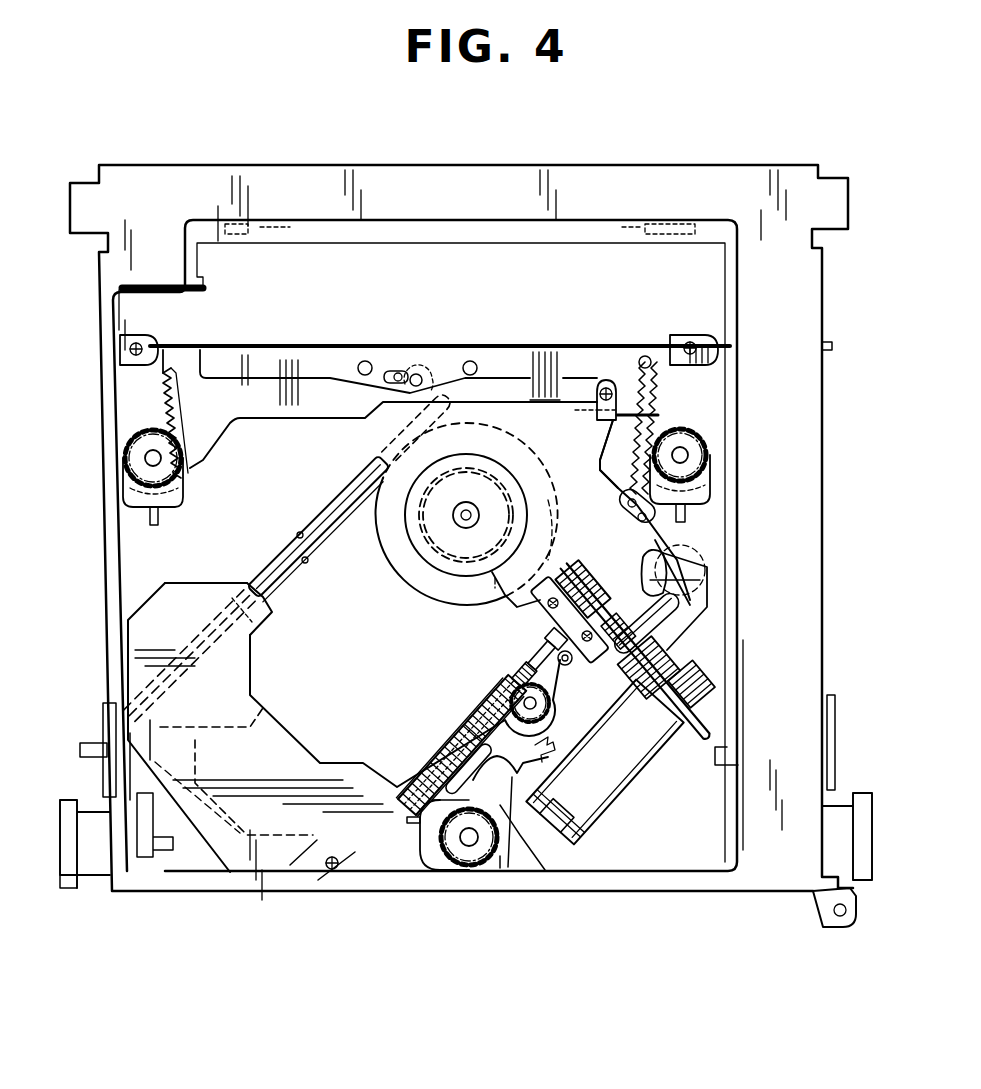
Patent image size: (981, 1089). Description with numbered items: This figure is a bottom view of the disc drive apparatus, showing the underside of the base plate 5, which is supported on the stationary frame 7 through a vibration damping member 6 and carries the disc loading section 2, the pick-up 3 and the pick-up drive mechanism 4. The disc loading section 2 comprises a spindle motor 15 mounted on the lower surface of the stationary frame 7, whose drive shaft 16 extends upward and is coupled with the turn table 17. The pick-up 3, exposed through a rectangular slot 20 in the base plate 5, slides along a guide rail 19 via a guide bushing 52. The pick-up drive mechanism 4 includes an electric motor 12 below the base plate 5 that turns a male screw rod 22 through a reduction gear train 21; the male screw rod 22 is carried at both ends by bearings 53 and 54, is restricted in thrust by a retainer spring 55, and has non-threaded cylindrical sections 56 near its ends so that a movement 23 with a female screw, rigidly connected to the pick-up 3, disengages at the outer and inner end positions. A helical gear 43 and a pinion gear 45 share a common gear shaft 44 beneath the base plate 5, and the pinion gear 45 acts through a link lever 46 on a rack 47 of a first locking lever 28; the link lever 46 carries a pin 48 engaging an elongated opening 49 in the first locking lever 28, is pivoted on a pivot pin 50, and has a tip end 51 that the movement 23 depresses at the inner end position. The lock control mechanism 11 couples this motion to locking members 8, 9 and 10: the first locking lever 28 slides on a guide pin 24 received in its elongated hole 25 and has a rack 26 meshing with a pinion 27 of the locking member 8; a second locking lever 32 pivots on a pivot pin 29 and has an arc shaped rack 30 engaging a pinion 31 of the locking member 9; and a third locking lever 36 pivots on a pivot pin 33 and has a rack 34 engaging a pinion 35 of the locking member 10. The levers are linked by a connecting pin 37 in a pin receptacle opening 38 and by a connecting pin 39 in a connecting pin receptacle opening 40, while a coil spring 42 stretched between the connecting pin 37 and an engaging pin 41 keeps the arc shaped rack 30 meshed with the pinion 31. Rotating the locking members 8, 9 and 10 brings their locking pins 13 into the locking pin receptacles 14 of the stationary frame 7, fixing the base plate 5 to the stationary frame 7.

The disc loading section 2 is at (352, 566).
The pick-up 3 is at (297, 698).
The pick-up drive mechanism 4 is at (695, 718).
The base plate 5 is at (155, 560).
The vibration damping member 6 is at (92, 862).
The stationary frame 7 is at (103, 597).
The locking member 8 is at (425, 930).
The locking member 9 is at (755, 486).
The locking member 10 is at (130, 490).
The lock control mechanism 11 is at (768, 580).
The electric motor 12 is at (665, 760).
The locking pins 13 is at (687, 518).
The locking pin receptacle 14 is at (112, 452).
The spindle motor 15 is at (415, 555).
The drive shaft 16 is at (462, 525).
The turn table 17 is at (445, 596).
The guide rail 19 is at (305, 563).
The rectangular slot 20 is at (298, 533).
The reduction gear train 21 is at (682, 662).
The male screw rod 22 is at (457, 722).
The movement 23 is at (398, 788).
The guide pin 24 is at (420, 777).
The elongated hole 25 is at (440, 767).
The rack 26 is at (520, 838).
The pinion 27 is at (502, 858).
The first locking lever 28 is at (530, 845).
The pivot pin 29 is at (472, 362).
The arc shaped rack 30 is at (665, 385).
The pinion 31 is at (702, 430).
The second locking lever 32 is at (543, 320).
The pivot pin 33 is at (364, 362).
The rack 34 is at (165, 398).
The pinion 35 is at (125, 440).
The third locking lever 36 is at (260, 320).
The connecting pin 37 is at (632, 528).
The pin receptacle opening 38 is at (625, 515).
The connecting pin 39 is at (418, 373).
The connecting pin receptacle opening 40 is at (398, 372).
The engaging pin 41 is at (647, 357).
The coil spring 42 is at (602, 378).
The helical gear 43 is at (473, 732).
The gear shaft 44 is at (513, 690).
The pinion gear 45 is at (470, 707).
The link lever 46 is at (533, 660).
The rack 47 is at (565, 695).
The pin 48 is at (672, 700).
The elongated opening 49 is at (660, 625).
The pivot pin 50 is at (520, 628).
The tip end 51 is at (548, 628).
The guide bushing 52 is at (242, 600).
The bearing 53 is at (343, 873).
The bearing 54 is at (558, 572).
The retainer spring 55 is at (622, 588).
The non-threaded cylindrical sections 56 is at (520, 672).